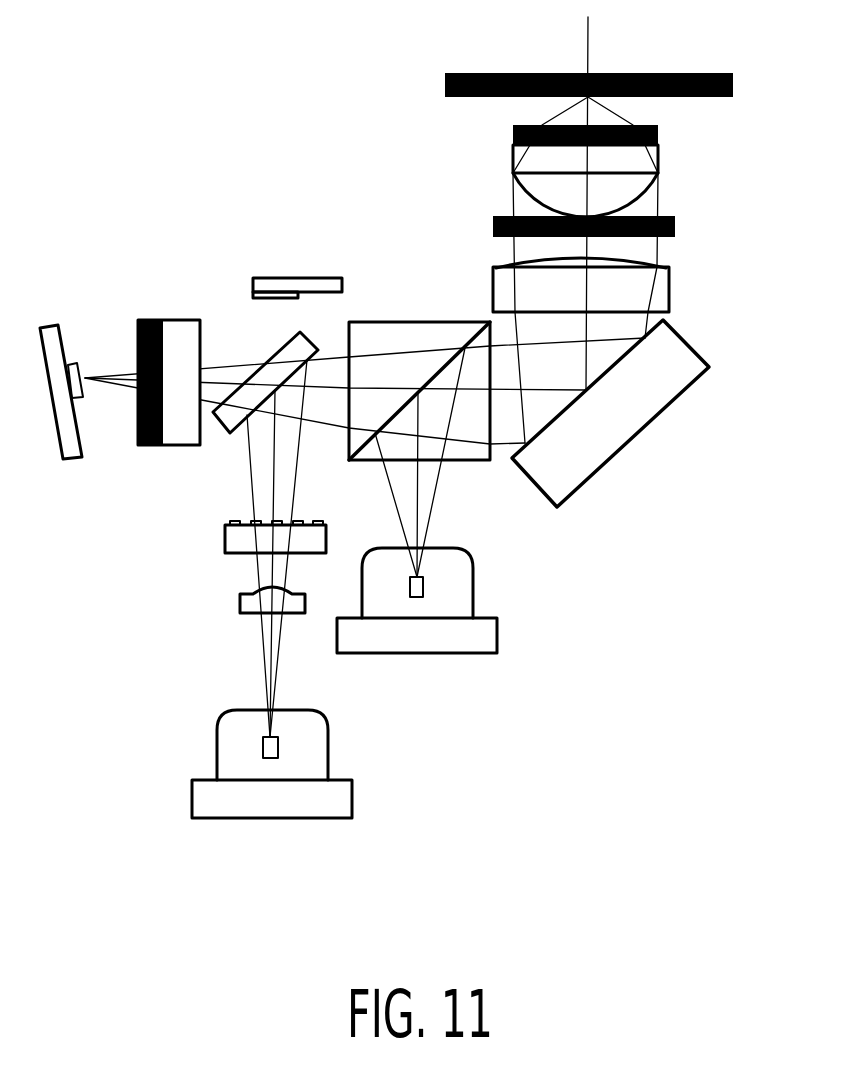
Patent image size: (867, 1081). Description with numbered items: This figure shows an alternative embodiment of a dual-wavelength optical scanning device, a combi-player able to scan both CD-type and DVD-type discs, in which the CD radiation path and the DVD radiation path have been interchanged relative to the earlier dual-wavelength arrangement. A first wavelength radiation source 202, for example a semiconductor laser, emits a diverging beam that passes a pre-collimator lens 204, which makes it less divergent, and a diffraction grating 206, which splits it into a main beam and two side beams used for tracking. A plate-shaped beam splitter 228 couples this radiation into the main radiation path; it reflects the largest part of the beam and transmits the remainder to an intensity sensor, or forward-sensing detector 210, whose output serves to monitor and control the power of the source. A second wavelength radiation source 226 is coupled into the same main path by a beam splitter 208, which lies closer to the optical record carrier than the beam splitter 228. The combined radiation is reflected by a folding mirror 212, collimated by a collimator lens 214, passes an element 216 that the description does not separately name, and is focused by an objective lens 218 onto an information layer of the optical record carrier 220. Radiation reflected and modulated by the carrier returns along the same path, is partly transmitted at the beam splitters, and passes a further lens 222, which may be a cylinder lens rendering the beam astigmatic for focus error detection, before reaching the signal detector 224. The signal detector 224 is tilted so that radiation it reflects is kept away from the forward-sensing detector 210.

The first wavelength radiation source 202 is at (312, 806).
The pre-collimator lens 204 is at (238, 605).
The diffraction grating 206 is at (228, 538).
The beam splitter 208 is at (452, 320).
The intensity sensor 210 is at (288, 276).
The folding mirror 212 is at (642, 433).
The collimator lens 214 is at (669, 295).
The aperture stop 216 is at (675, 228).
The objective lens 218 is at (657, 157).
The optical record carrier 220 is at (700, 72).
The further lens 222 is at (155, 447).
The signal detector 224 is at (58, 340).
The second wavelength radiation source 226 is at (473, 642).
The beam splitter 228 is at (292, 338).